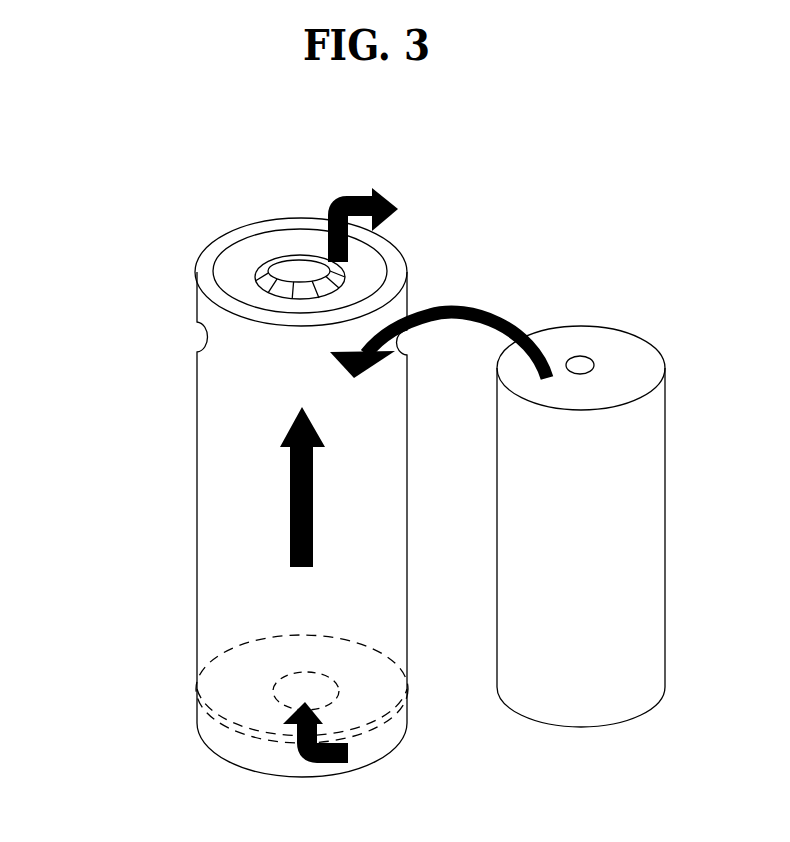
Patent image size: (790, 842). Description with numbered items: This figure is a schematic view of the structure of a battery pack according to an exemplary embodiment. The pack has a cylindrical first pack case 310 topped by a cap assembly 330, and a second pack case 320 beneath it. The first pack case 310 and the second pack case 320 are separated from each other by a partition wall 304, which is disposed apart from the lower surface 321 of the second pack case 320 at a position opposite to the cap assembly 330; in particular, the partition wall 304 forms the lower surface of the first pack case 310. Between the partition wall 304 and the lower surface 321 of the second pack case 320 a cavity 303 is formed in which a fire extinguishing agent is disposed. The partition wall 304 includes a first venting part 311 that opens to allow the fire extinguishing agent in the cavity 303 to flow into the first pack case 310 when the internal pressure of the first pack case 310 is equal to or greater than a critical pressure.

The cap assembly 330 is at (208, 264).
The first venting part 311 is at (308, 675).
The first pack case 310 is at (197, 605).
The second pack case 320 is at (197, 715).
The cavity 303 is at (230, 756).
The partition wall 304 is at (367, 682).
The lower surface 321 is at (352, 768).